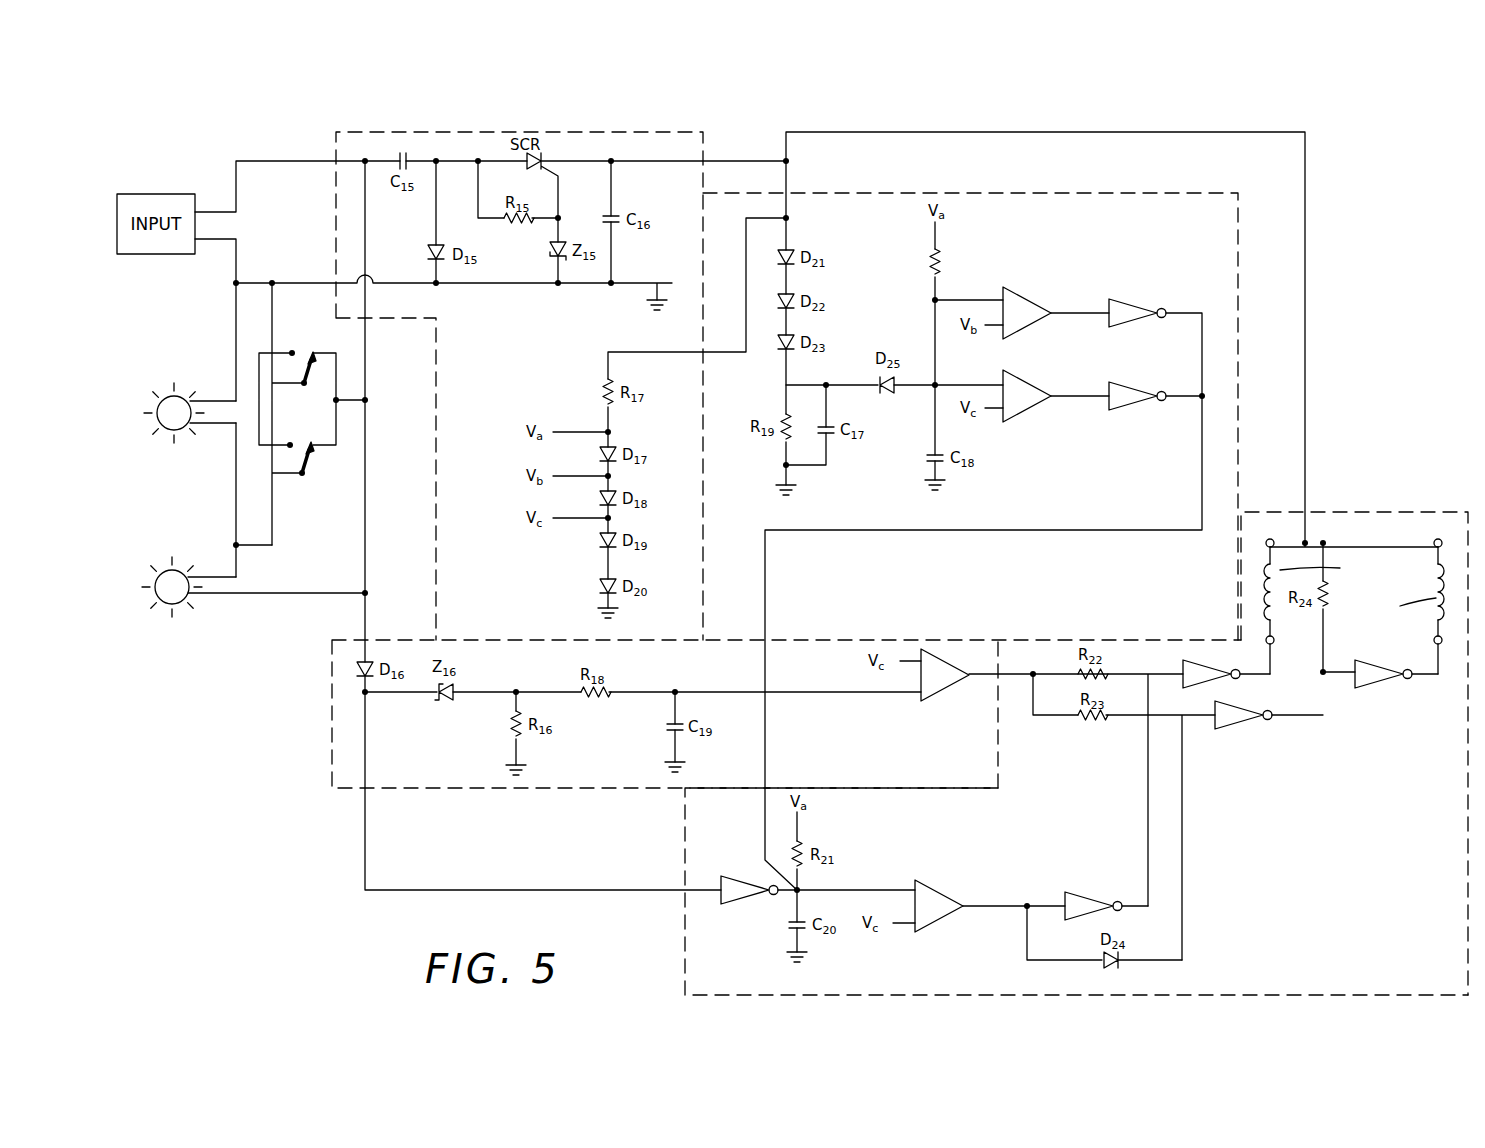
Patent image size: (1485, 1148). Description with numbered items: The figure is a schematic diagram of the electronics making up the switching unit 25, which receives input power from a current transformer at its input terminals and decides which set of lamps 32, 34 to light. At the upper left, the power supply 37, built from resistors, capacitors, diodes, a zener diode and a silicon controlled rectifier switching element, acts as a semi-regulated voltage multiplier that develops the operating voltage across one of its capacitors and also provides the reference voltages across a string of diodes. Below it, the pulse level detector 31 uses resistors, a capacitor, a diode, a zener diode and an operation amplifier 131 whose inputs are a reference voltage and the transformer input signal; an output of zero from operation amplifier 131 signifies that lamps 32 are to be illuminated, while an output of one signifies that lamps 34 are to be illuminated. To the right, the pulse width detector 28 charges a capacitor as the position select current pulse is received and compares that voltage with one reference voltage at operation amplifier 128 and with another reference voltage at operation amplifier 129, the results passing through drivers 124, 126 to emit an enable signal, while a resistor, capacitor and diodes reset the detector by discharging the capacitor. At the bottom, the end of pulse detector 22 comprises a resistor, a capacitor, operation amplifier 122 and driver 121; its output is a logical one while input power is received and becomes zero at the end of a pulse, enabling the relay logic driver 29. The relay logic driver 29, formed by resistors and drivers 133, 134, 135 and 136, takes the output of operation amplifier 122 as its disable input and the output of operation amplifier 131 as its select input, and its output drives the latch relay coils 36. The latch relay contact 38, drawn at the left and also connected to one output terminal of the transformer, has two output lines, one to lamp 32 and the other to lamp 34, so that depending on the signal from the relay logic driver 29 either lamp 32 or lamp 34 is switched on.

The power supply 37 is at (474, 131).
The pulse width detector 28 is at (1039, 193).
The switching unit 25 is at (1389, 245).
The relay logic driver 29 is at (1398, 513).
The lamps 32 is at (187, 400).
The lamps 34 is at (163, 563).
The latch relay contact 38 is at (327, 453).
The pulse level detector 31 is at (331, 721).
The end of pulse detector 22 is at (684, 953).
The driver 121 is at (736, 878).
The operation amplifier 122 is at (944, 890).
The driver 124 is at (1134, 298).
The driver 126 is at (1134, 382).
The operation amplifier 128 is at (1030, 298).
The operation amplifier 129 is at (1030, 382).
The operation amplifier 131 is at (957, 688).
The driver 133 is at (1205, 664).
The driver 134 is at (1375, 688).
The driver 135 is at (1240, 727).
The driver 136 is at (1088, 892).
The latch relay coils 36 is at (1411, 615).